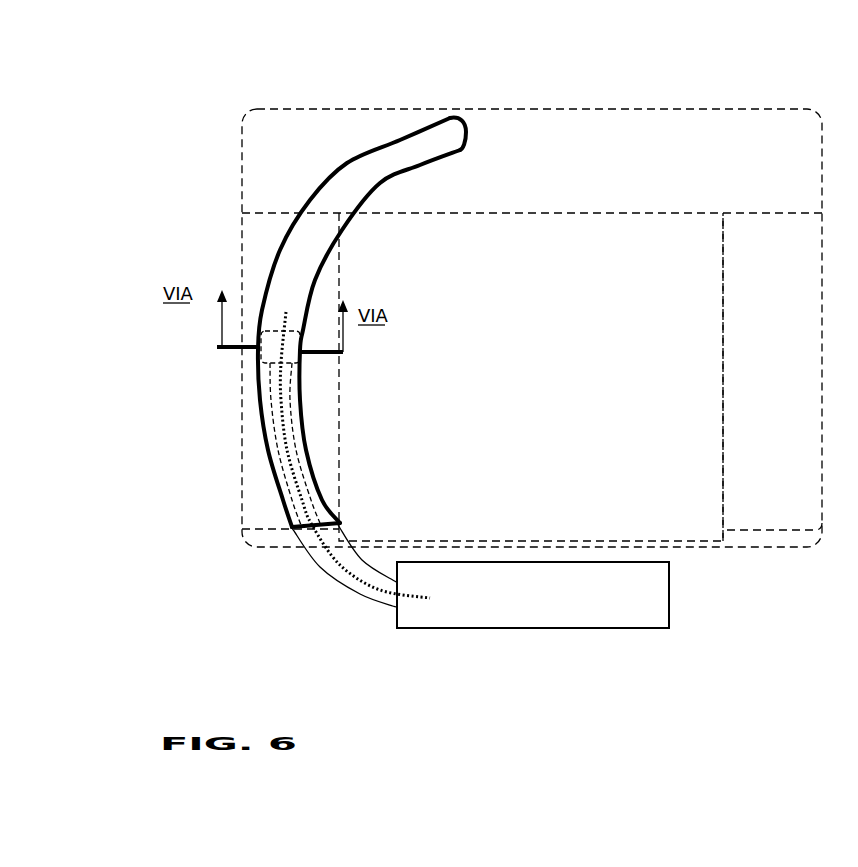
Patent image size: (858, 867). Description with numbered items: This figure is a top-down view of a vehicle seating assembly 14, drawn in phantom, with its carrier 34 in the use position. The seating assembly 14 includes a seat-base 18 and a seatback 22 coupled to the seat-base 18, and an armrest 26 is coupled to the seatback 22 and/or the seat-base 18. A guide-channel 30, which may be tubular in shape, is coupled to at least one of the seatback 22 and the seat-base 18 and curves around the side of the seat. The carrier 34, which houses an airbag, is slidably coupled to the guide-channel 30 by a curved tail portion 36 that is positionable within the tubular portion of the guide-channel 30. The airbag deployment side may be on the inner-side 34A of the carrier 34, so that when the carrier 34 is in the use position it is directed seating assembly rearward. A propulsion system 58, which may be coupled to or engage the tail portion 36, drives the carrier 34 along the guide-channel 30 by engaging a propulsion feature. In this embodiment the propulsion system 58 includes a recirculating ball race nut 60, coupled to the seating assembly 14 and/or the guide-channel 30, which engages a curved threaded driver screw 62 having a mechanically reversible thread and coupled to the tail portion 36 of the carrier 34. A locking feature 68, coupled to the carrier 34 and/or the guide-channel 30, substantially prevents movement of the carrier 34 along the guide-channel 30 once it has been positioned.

The seating assembly 14 is at (520, 78).
The seat-base 18 is at (583, 383).
The seatback 22 is at (598, 188).
The armrest 26 is at (311, 421).
The guide-channel 30 is at (360, 183).
The carrier 34 is at (563, 600).
The inner-side of the carrier 34A is at (580, 557).
The tail portion 36 is at (325, 562).
The propulsion system 58 is at (240, 356).
The recirculating ball race nut 60 is at (260, 350).
The threaded driver screw 62 is at (272, 430).
The locking feature 68 is at (284, 302).